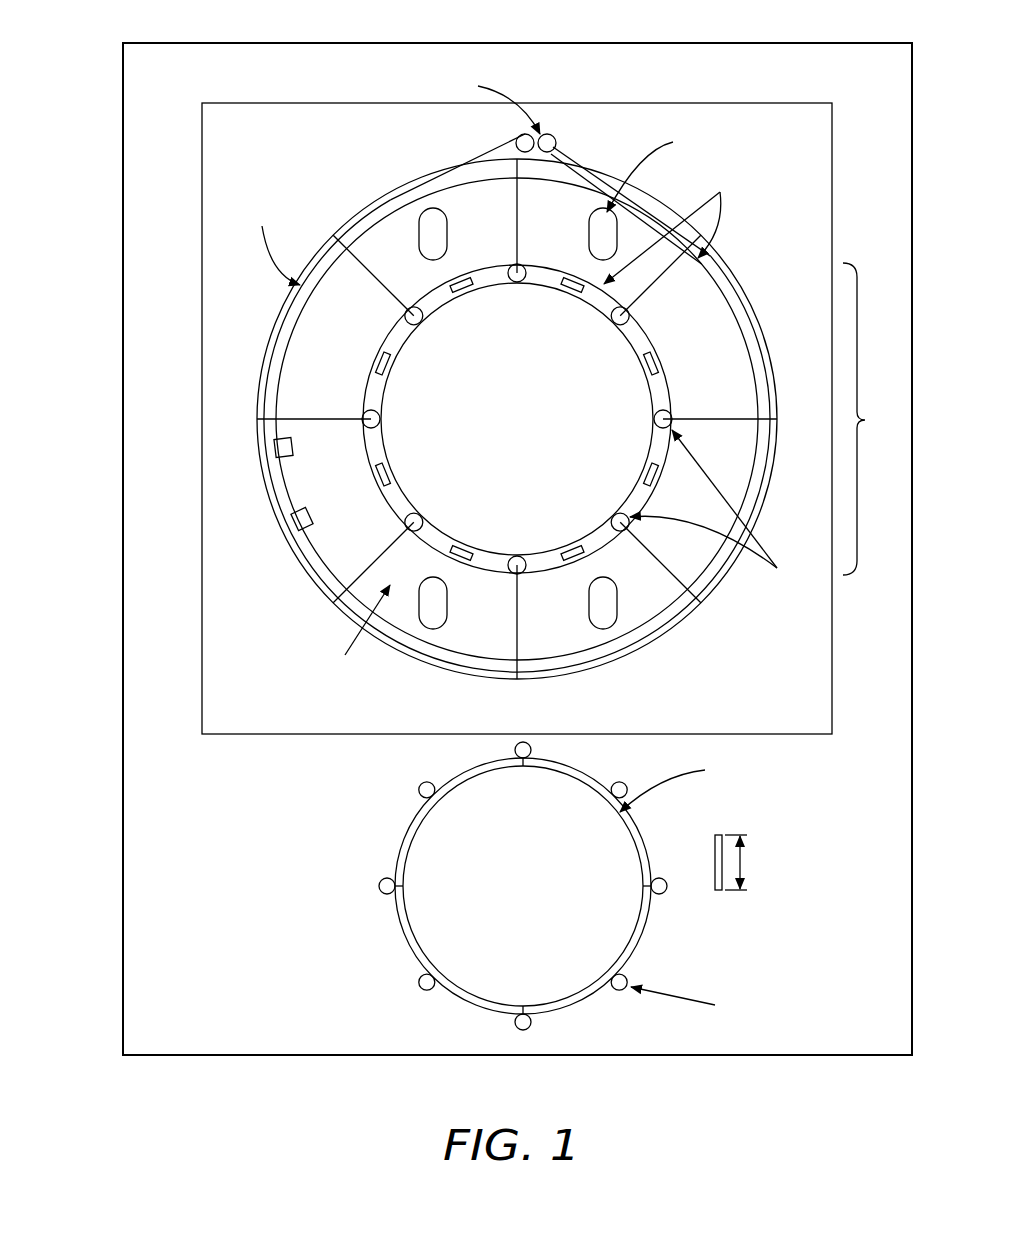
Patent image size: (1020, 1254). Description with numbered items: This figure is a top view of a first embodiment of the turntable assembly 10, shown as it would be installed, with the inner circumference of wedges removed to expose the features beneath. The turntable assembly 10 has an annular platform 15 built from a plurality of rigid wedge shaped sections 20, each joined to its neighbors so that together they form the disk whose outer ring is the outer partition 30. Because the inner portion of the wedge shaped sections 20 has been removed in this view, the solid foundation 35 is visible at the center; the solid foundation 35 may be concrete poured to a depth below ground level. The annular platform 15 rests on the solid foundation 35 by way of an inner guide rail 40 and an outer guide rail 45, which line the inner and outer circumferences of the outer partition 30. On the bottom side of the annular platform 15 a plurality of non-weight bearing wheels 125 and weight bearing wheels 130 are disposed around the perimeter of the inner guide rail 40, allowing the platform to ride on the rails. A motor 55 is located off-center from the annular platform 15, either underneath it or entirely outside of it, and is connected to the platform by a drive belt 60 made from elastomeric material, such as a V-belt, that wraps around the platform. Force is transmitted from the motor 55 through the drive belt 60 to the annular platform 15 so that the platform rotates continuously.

The turntable assembly 10 is at (471, 532).
The annular platform 15 is at (466, 477).
The rigid wedge shaped sections 20 is at (435, 414).
The outer partition 30 is at (474, 418).
The solid foundation 35 is at (535, 485).
The inner guide rail 40 is at (675, 374).
The outer guide rail 45 is at (730, 290).
The motor 55 is at (558, 138).
The drive belt 60 is at (352, 225).
The non-weight bearing wheels 125 is at (650, 423).
The weight bearing wheels 130 is at (275, 455).